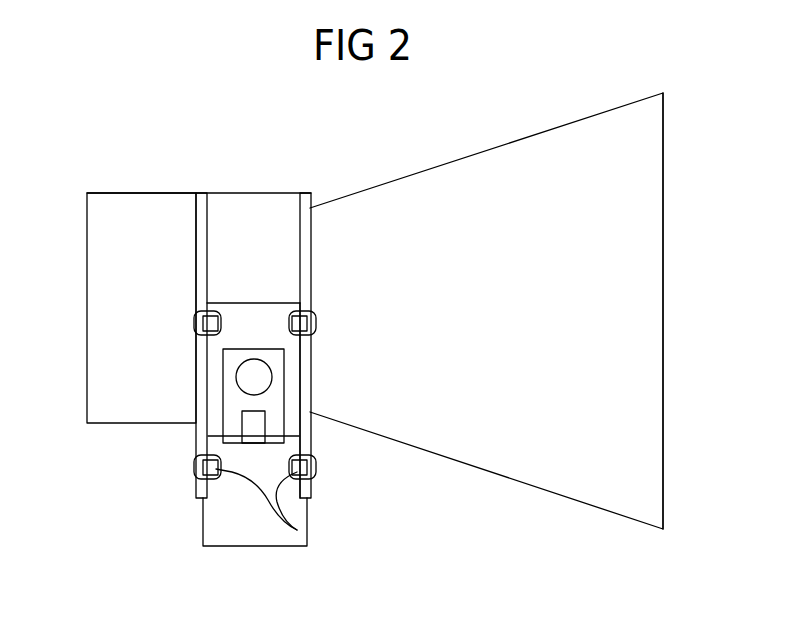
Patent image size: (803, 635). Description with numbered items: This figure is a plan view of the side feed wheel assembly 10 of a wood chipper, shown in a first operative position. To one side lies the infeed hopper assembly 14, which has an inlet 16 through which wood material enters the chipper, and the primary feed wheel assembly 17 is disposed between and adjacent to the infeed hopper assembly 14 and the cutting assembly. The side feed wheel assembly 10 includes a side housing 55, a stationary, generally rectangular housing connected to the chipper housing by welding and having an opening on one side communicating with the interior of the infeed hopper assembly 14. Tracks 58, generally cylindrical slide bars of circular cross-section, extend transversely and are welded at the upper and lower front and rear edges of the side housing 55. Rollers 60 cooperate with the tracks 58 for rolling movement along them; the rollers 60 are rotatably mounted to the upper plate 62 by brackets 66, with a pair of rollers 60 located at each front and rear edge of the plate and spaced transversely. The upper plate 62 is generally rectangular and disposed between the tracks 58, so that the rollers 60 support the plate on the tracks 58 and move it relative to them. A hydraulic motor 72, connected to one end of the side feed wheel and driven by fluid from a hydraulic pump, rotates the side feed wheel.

The side feed wheel assembly 10 is at (150, 455).
The infeed hopper assembly 14 is at (528, 135).
The inlet 16 is at (663, 185).
The primary feed wheel assembly 17 is at (232, 193).
The side housing 55 is at (311, 433).
The tracks 58 is at (196, 207).
The rollers 60 is at (193, 478).
The upper plate 62 is at (232, 535).
The brackets 66 is at (297, 530).
The hydraulic motor 72 is at (250, 377).